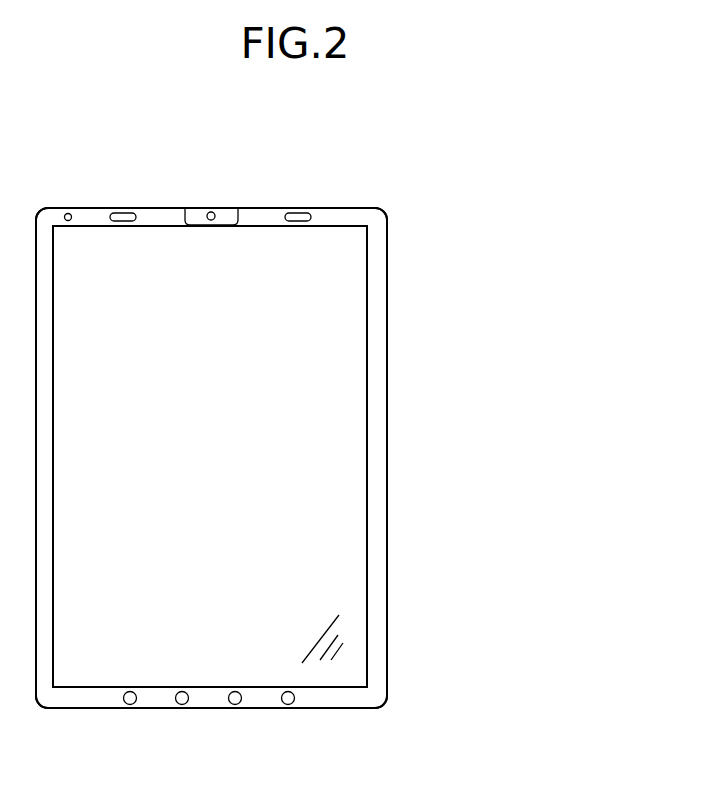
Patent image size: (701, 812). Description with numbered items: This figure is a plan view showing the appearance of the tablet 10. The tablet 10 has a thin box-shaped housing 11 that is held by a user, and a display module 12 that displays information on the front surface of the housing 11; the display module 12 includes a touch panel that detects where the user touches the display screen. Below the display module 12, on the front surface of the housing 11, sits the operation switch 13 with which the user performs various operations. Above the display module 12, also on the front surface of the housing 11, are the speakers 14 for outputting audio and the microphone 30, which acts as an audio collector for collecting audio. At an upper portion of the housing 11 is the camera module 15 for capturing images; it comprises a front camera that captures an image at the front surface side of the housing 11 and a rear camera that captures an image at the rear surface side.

The tablet 10 is at (357, 173).
The housing 11 is at (387, 320).
The display module 12 is at (367, 426).
The operation switch 13 is at (123, 723).
The speakers 14 is at (124, 212).
The camera module 15 is at (225, 206).
The microphone 30 is at (68, 212).